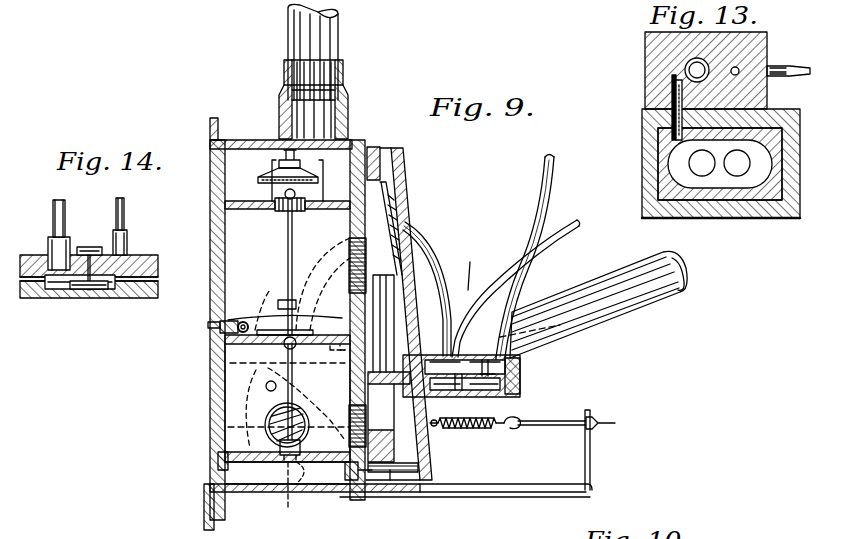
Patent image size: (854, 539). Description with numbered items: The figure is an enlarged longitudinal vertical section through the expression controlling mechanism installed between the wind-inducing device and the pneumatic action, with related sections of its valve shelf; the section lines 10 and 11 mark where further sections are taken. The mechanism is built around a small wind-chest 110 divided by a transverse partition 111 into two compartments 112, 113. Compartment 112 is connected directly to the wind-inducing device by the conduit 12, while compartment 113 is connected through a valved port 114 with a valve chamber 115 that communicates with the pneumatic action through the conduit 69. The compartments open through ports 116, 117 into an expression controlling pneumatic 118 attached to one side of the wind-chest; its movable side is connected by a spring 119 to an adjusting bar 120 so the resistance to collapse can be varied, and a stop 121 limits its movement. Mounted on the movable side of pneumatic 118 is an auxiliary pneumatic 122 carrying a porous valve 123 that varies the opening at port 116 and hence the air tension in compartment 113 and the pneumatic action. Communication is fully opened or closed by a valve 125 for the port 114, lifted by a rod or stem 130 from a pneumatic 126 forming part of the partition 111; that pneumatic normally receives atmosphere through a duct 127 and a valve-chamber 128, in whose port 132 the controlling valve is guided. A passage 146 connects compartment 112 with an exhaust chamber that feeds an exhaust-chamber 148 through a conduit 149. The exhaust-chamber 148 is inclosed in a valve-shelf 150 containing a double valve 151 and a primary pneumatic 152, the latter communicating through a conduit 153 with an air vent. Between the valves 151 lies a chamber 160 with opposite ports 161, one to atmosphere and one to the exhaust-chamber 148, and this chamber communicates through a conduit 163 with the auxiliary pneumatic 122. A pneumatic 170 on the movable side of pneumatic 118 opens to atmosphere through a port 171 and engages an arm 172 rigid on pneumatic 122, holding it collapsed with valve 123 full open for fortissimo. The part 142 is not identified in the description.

In FIG. 9, the section line 10 is at (290, 260).
In FIG. 9, the section line 11 is at (232, 430).
In FIG. 9, the conduit 12 is at (624, 305).
In FIG. 9, the conduit 69 is at (328, 35).
In FIG. 9, the wind-chest 110 is at (222, 458).
In FIG. 13, the wind-chest 110 is at (750, 218).
In FIG. 9, the transverse partition 111 is at (212, 342).
In FIG. 13, the transverse partition 111 is at (722, 200).
In FIG. 9, the compartment 112 is at (245, 386).
In FIG. 9, the compartment 113 is at (240, 232).
In FIG. 9, the valved port 114 is at (300, 211).
In FIG. 9, the valve chamber 115 is at (250, 166).
In FIG. 9, the port 116 is at (354, 416).
In FIG. 9, the port 117 is at (358, 268).
In FIG. 9, the expression controlling pneumatic 118 is at (432, 478).
In FIG. 9, the spring 119 is at (506, 428).
In FIG. 9, the adjusting bar 120 is at (616, 424).
In FIG. 9, the stop 121 is at (374, 472).
In FIG. 9, the auxiliary pneumatic 122 is at (394, 482).
In FIG. 9, the porous valve 123 is at (346, 478).
In FIG. 9, the valve 125 is at (238, 182).
In FIG. 9, the pneumatic 126 is at (270, 322).
In FIG. 13, the pneumatic 126 is at (688, 176).
In FIG. 9, the duct 127 is at (236, 324).
In FIG. 13, the duct 127 is at (676, 118).
In FIG. 13, the valve-chamber 128 is at (686, 62).
In FIG. 9, the rod or stem 130 is at (290, 238).
In FIG. 13, the port 132 is at (706, 68).
In FIG. 9, the screw 142 is at (576, 227).
In FIG. 13, the screw 142 is at (800, 76).
In FIG. 9, the passage 146 is at (287, 396).
In FIG. 9, the exhaust-chamber 148 is at (522, 368).
In FIG. 14, the exhaust-chamber 148 is at (65, 300).
In FIG. 9, the conduit 149 is at (412, 230).
In FIG. 13, the conduit 149 is at (738, 74).
In FIG. 14, the conduit 149 is at (52, 210).
In FIG. 9, the valve-shelf 150 is at (522, 382).
In FIG. 14, the valve-shelf 150 is at (158, 277).
In FIG. 9, the double valve 151 is at (484, 356).
In FIG. 14, the double valve 151 is at (108, 294).
In FIG. 9, the primary pneumatic 152 is at (502, 396).
In FIG. 14, the primary pneumatic 152 is at (90, 300).
In FIG. 9, the conduit 153 is at (556, 176).
In FIG. 14, the conduit 153 is at (120, 208).
In FIG. 9, the chamber 160 is at (512, 345).
In FIG. 9, the ports 161 is at (455, 432).
In FIG. 9, the conduit 163 is at (356, 376).
In FIG. 9, the pneumatic 170 is at (398, 198).
In FIG. 9, the port 171 is at (402, 216).
In FIG. 9, the arm 172 is at (430, 252).